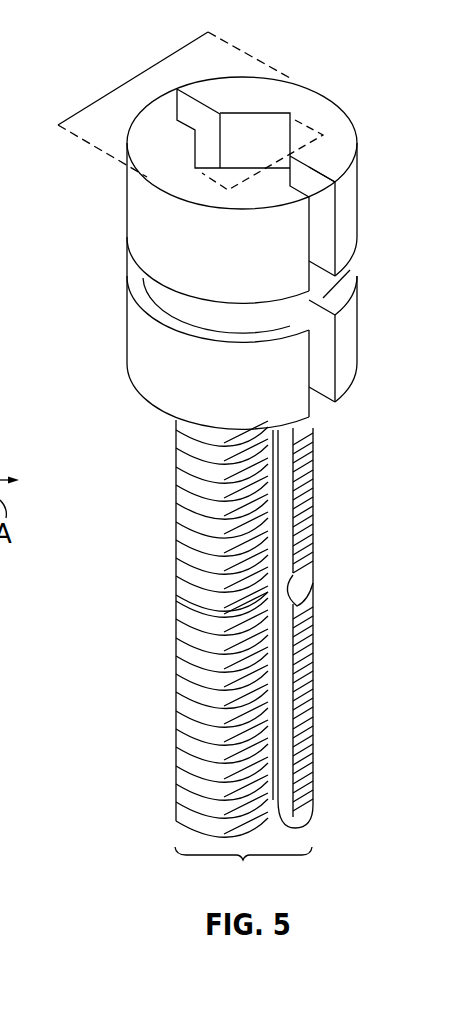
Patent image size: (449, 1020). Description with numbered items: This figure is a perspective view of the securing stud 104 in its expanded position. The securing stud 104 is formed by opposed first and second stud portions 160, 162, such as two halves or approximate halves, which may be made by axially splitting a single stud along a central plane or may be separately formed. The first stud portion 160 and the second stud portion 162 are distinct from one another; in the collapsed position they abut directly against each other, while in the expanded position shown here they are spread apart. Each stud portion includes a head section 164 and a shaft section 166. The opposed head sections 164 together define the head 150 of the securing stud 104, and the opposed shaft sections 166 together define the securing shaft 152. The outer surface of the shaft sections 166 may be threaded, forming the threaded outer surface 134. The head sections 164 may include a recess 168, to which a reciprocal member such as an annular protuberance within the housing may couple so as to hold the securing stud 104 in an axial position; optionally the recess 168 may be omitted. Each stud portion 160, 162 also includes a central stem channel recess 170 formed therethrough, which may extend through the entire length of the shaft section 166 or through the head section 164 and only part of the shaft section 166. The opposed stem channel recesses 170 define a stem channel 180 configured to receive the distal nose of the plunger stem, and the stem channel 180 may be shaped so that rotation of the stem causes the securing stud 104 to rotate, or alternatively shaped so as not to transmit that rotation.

The securing stud 104 is at (70, 92).
The head 150 is at (132, 79).
The second stud portion 162 is at (347, 113).
The stem channel recess 170 is at (197, 148).
The first stud portion 160 is at (127, 200).
The head section 164 is at (127, 258).
The stem channel 180 is at (334, 188).
The recess 168 is at (353, 258).
The shaft section 166 is at (176, 552).
The threaded outer surface 134 is at (176, 750).
The securing shaft 152 is at (243, 872).